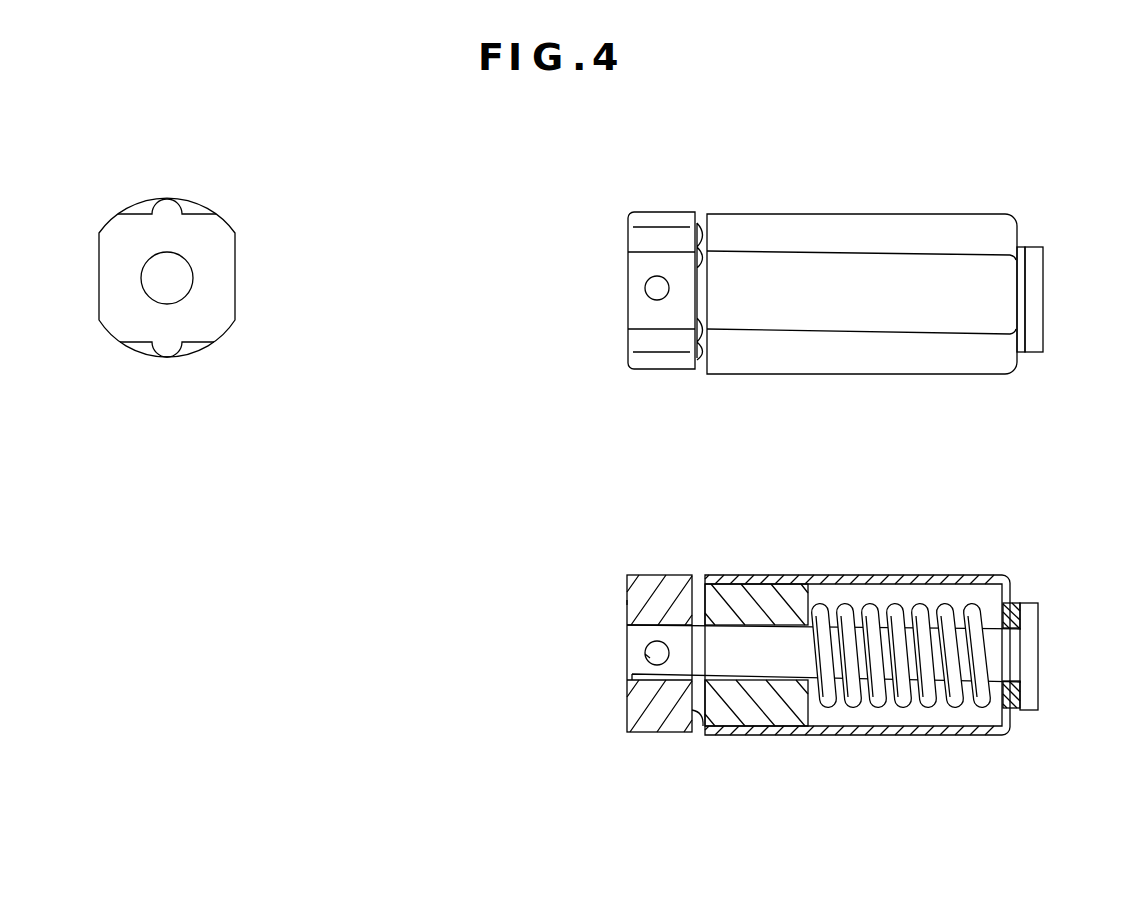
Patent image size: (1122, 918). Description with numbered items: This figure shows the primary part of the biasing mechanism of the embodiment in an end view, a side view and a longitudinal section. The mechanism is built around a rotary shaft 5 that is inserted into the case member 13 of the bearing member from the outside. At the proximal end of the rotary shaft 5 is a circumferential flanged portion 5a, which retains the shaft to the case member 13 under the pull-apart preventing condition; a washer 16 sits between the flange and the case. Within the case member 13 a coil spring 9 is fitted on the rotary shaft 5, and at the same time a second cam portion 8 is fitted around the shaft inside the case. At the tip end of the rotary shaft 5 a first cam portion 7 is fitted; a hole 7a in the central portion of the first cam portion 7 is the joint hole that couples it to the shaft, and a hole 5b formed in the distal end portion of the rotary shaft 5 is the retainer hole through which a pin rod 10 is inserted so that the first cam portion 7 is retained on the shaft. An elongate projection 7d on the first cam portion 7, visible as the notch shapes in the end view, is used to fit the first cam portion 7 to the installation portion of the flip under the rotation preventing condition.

The rotary shaft 5 is at (152, 279).
The circumferential flanged portion 5a is at (1033, 297).
The hole 5b is at (645, 654).
The first cam portion 7 is at (218, 288).
The hole 7a is at (625, 606).
The elongate projection 7d is at (166, 199).
The second cam portion 8 is at (733, 720).
The coil spring 9 is at (908, 703).
The pin rod 10 is at (657, 666).
The case member 13 is at (857, 237).
The washer 16 is at (1019, 246).